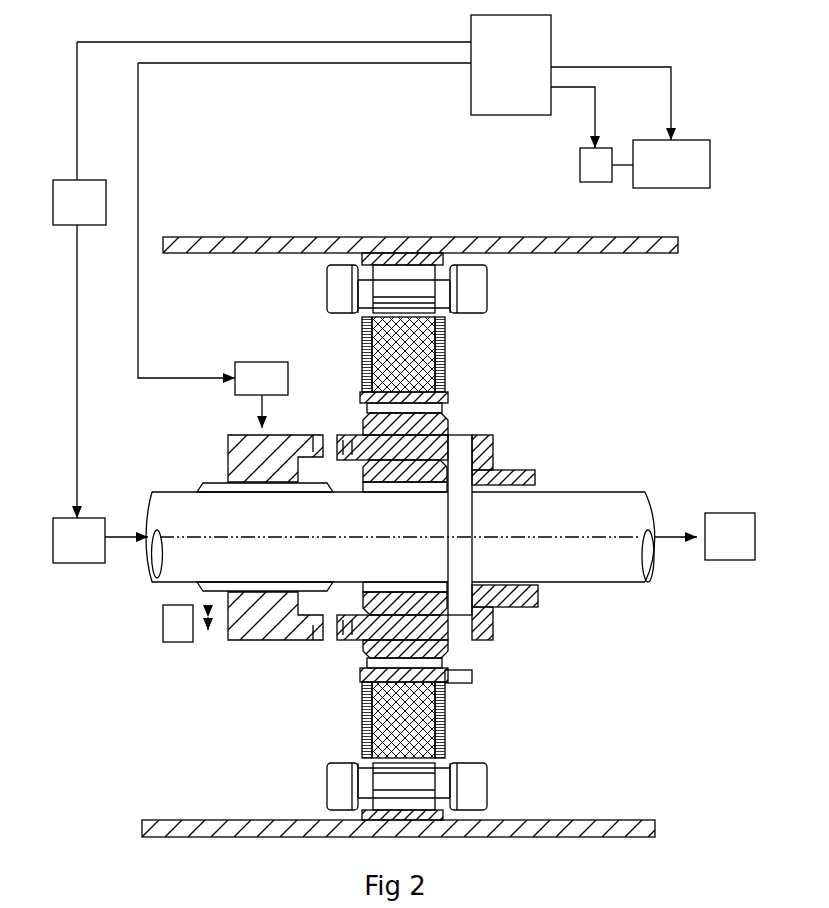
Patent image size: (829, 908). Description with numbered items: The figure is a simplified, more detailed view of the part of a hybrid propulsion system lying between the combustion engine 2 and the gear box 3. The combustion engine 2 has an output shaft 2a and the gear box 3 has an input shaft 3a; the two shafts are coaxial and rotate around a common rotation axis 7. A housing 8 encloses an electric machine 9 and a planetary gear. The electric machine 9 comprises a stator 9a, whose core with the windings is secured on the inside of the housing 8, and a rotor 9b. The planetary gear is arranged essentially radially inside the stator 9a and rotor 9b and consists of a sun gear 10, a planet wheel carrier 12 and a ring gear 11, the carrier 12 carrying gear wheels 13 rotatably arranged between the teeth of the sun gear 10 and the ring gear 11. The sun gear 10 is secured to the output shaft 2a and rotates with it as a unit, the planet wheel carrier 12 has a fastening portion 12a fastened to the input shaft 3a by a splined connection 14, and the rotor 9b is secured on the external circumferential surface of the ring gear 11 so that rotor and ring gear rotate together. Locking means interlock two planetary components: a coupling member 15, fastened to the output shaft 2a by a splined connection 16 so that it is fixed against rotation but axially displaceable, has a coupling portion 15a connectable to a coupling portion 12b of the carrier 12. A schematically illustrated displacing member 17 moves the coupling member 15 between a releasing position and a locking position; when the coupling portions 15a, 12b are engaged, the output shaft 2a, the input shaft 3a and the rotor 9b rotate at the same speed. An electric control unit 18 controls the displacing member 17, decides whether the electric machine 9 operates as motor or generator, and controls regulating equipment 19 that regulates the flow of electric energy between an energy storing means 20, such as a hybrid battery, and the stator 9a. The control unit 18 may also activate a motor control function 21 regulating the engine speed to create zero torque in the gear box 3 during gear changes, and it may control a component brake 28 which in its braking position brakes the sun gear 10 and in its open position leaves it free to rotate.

The combustion engine 2 is at (78, 545).
The output shaft 2a is at (173, 565).
The gear box 3 is at (733, 542).
The input shaft 3a is at (595, 563).
The rotation axis 7 is at (598, 535).
The housing 8 is at (248, 820).
The electric machine 9 is at (305, 291).
The stator 9a is at (470, 300).
The rotor 9b is at (380, 345).
The sun gear 10 is at (385, 495).
The ring gear 11 is at (392, 398).
The planet wheel carrier 12 is at (467, 630).
The fastening portion 12a is at (510, 597).
The coupling portion 12b is at (328, 647).
The gear wheels 13 is at (400, 425).
The splined connection 14 is at (530, 592).
The coupling member 15 is at (247, 467).
The coupling portion 15a is at (303, 638).
The splined connection 16 is at (238, 489).
The displacing member 17 is at (267, 368).
The electric control unit 18 is at (497, 76).
The regulating equipment 19 is at (583, 166).
The energy storing means 20 is at (684, 163).
The motor control function 21 is at (90, 203).
The component brake 28 is at (178, 627).